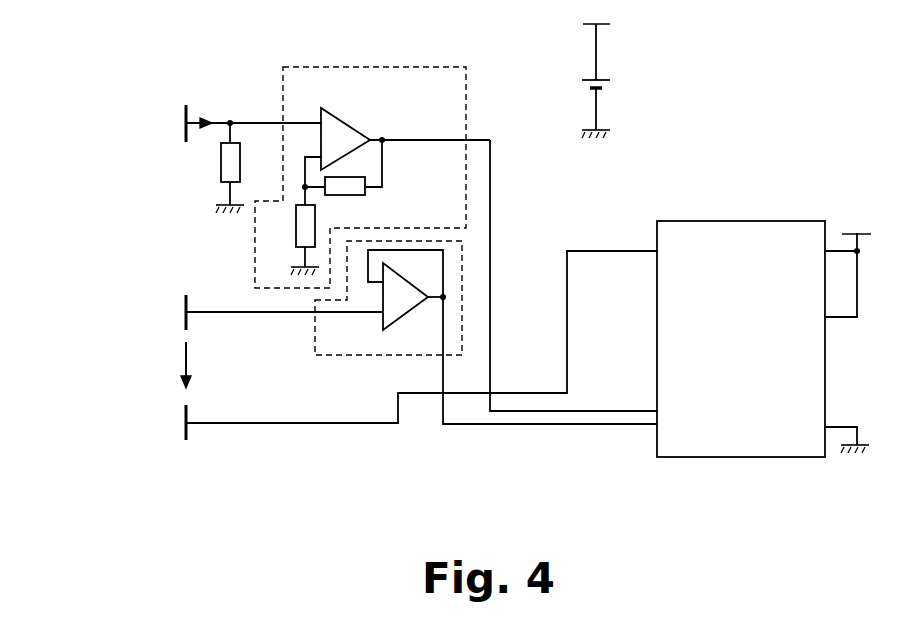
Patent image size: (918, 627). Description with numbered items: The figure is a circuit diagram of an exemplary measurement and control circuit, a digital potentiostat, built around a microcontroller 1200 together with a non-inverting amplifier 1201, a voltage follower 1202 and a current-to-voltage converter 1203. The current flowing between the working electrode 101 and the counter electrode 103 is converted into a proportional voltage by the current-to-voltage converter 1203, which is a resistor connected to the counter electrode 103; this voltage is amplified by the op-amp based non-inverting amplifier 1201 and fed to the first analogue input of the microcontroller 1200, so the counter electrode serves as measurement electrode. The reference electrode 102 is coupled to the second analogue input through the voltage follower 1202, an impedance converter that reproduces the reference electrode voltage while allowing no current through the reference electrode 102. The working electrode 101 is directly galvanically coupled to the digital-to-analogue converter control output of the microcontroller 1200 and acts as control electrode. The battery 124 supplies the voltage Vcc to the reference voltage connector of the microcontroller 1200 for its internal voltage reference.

The working electrode 101 is at (170, 433).
The reference electrode 102 is at (175, 300).
The counter electrode 103 is at (180, 108).
The battery 124 is at (620, 78).
The microcontroller 1200 is at (753, 438).
The non-inverting amplifier 1201 is at (347, 87).
The voltage follower 1202 is at (382, 355).
The current-to-voltage converter 1203 is at (217, 165).